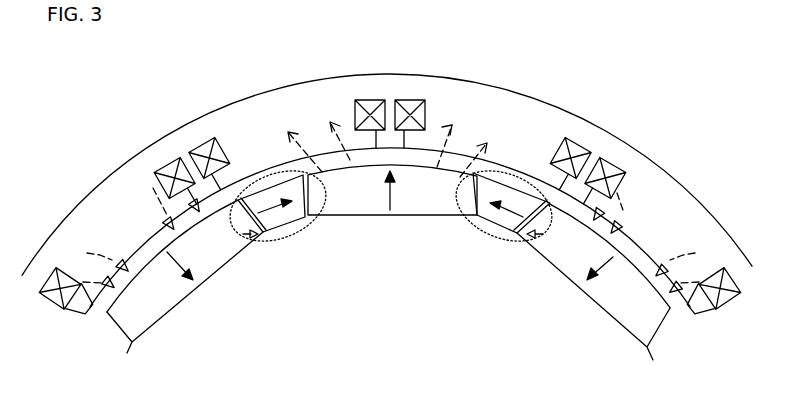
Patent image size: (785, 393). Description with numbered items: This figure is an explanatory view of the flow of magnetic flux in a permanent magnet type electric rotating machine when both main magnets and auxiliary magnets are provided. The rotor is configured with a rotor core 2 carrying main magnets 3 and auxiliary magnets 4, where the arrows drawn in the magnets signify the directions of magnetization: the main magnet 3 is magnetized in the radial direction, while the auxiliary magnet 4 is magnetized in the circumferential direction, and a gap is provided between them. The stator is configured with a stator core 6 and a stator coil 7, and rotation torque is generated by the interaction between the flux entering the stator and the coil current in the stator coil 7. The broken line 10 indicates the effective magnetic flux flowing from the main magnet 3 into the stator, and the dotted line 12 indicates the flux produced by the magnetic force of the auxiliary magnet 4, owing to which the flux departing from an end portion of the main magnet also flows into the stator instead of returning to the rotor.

The rotor core 2 is at (290, 277).
The main magnet 3 is at (353, 203).
The auxiliary magnet 4 is at (500, 218).
The stator core 6 is at (490, 122).
The stator coil 7 is at (573, 150).
The broken line 10 is at (347, 147).
The dotted line 12 is at (258, 168).